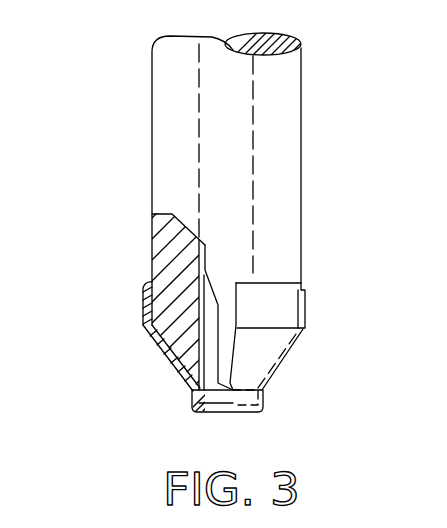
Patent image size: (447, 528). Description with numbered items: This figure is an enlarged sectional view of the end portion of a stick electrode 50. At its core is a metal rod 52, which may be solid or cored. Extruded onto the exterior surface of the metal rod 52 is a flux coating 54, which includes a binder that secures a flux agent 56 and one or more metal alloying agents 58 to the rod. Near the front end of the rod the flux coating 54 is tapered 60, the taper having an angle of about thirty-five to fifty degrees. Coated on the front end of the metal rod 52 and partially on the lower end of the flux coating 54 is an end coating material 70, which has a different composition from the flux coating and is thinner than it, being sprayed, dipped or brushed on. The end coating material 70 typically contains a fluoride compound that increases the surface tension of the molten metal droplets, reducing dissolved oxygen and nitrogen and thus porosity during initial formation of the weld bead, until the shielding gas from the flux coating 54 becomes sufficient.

The stick electrode 50 is at (120, 119).
The metal rod 52 is at (210, 312).
The flux coating 54 is at (312, 132).
The flux agent 56 is at (300, 89).
The metal alloying agent 58 is at (277, 218).
The taper 60 is at (182, 350).
The end coating material 70 is at (150, 321).